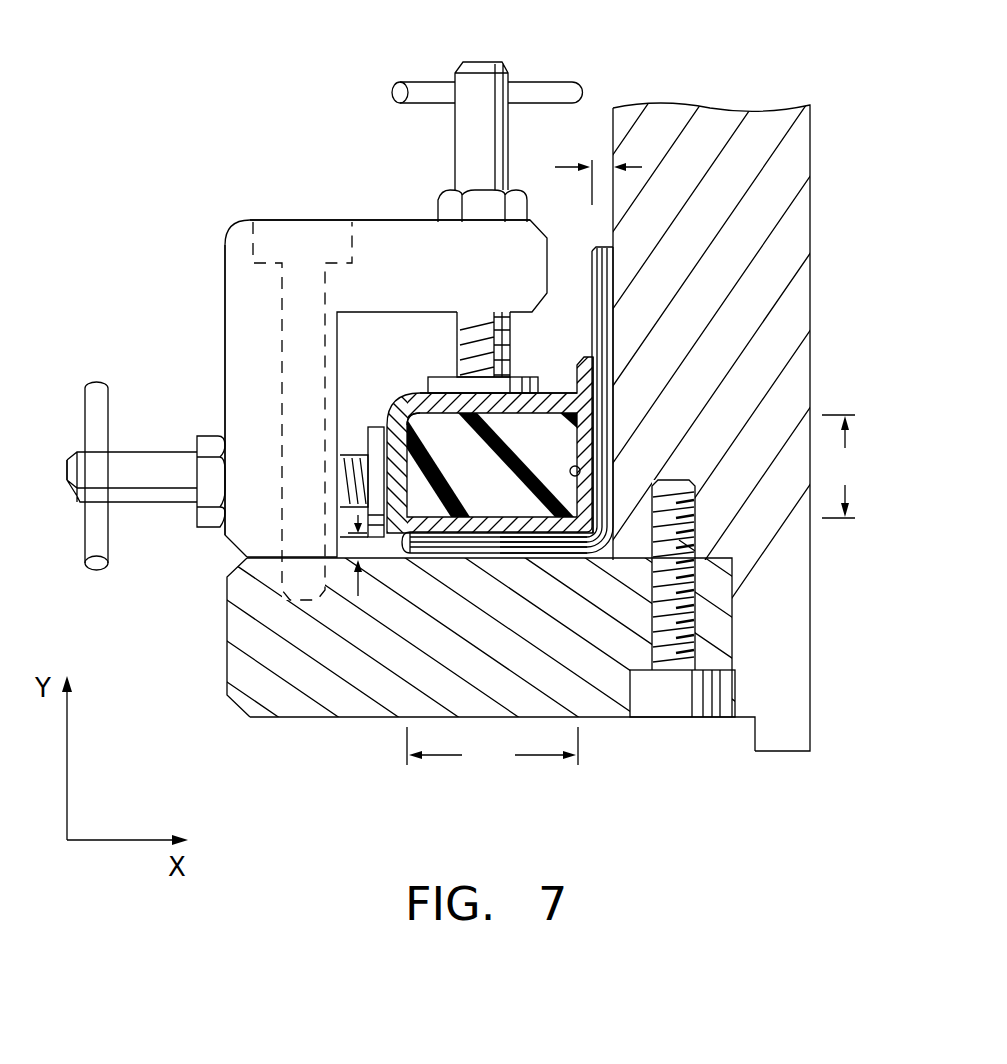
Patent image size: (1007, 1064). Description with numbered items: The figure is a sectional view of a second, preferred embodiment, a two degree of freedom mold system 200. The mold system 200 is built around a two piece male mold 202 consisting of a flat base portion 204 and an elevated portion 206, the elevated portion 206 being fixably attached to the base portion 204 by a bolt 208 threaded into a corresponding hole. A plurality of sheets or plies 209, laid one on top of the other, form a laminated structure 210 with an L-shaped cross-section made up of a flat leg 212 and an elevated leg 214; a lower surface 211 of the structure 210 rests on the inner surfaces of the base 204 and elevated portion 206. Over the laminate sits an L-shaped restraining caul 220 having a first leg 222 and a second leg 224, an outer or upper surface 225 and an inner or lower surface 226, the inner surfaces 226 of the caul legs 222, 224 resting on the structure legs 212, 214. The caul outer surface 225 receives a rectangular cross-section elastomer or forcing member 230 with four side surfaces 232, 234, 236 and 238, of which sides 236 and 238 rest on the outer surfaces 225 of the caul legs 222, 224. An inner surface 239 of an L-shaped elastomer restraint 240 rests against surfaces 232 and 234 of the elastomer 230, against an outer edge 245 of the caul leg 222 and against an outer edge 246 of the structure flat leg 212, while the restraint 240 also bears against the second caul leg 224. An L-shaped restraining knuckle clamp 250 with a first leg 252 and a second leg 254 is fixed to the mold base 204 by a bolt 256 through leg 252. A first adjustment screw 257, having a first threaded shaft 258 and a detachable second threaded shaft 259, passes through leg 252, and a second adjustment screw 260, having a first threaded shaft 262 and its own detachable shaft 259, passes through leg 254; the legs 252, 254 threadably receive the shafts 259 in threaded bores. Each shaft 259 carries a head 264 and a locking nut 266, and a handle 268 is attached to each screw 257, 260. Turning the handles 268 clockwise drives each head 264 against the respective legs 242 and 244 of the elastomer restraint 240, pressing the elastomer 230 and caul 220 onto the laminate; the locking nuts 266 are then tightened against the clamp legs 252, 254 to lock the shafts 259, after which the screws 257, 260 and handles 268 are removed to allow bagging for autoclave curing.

The two degree of freedom mold system 200 is at (245, 78).
The two piece male mold 202 is at (812, 118).
The flat base portion 204 is at (503, 645).
The elevated portion 206 is at (508, 425).
The bolt 208 is at (682, 693).
The sheets or plies 209 is at (595, 270).
The laminated structure 210 is at (598, 292).
The lower surface of the structure 211 is at (530, 560).
The flat leg 212 is at (537, 557).
The elevated leg 214 is at (607, 315).
The L-shaped restraining caul 220 is at (605, 372).
The first leg of the caul 222 is at (507, 555).
The second leg of the caul 224 is at (600, 400).
The outer or upper surface of the caul 225 is at (585, 467).
The inner or lower surface of the caul 226 is at (597, 425).
The elastomer or forcing member 230 is at (480, 465).
The side surface of the elastomer 232 is at (448, 407).
The side surface of the elastomer 234 is at (380, 472).
The side surface of the elastomer 236 is at (547, 553).
The side surface of the elastomer 238 is at (583, 460).
The inner surface of the elastomer restraint 239 is at (420, 440).
The L-shaped elastomer restraint 240 is at (415, 425).
The leg of the elastomer restraint 242 is at (407, 490).
The leg of the elastomer restraint 244 is at (561, 398).
The outer edge of the caul leg 245 is at (400, 545).
The outer edge of the structure flat leg 246 is at (413, 545).
The L-shaped restraining knuckle clamp 250 is at (245, 222).
The first leg of the clamp 252 is at (225, 272).
The second leg of the clamp 254 is at (380, 218).
The bolt 256 is at (297, 235).
The first adjustment screw 257 is at (75, 478).
The first threaded shaft 258 is at (106, 451).
The detachable second threaded shaft 259 is at (462, 318).
The second adjustment screw 260 is at (493, 62).
The first threaded shaft 262 is at (465, 118).
The head 264 is at (415, 430).
The locking nut 266 is at (447, 196).
The handle 268 is at (430, 78).